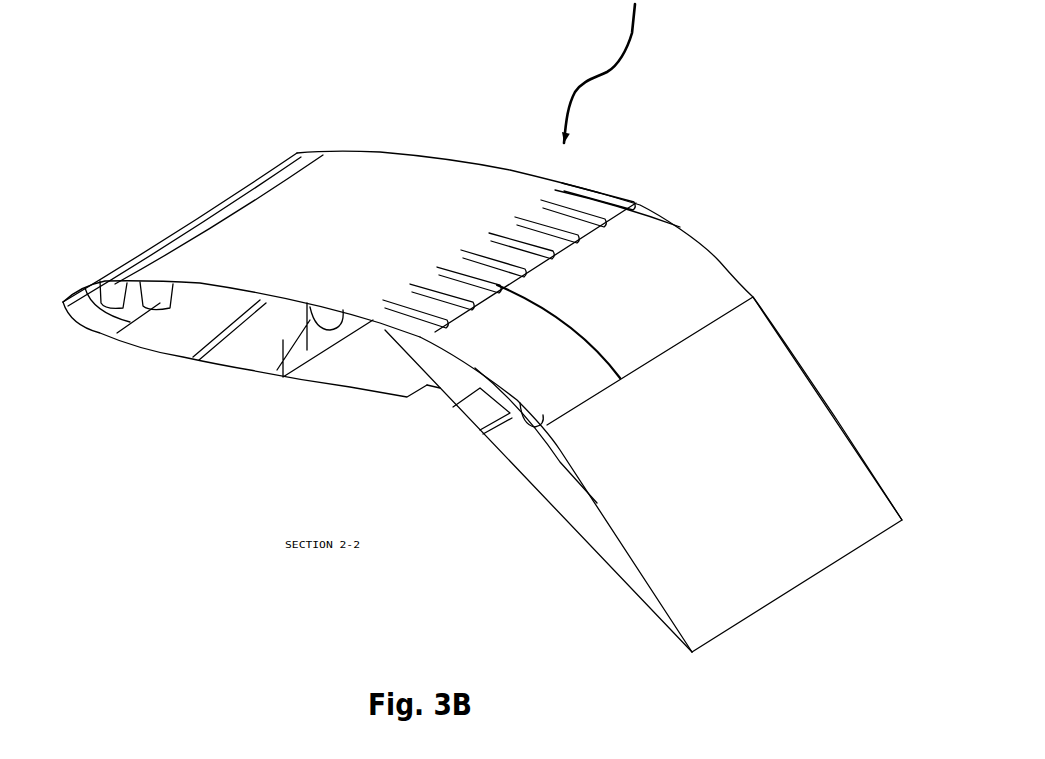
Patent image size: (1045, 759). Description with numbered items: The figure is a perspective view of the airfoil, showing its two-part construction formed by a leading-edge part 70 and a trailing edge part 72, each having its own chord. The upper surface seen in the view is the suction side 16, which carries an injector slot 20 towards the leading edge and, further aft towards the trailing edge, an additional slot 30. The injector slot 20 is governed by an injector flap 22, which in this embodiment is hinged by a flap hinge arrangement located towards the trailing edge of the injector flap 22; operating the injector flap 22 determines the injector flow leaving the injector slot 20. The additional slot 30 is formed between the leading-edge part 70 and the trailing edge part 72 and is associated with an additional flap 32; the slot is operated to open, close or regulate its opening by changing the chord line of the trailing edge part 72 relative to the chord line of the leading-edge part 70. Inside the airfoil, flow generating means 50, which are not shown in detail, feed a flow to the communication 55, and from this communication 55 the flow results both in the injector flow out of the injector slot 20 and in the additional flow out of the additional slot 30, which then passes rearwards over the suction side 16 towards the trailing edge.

The suction side 16 is at (400, 203).
The injector slot 20 is at (123, 258).
The injector flap 22 is at (297, 153).
The additional slot 30 is at (577, 270).
The additional flap 32 is at (642, 225).
The flow generating means 50 is at (112, 487).
The communication 55 is at (160, 330).
The airfoil leading-edge part 70 is at (223, 393).
The trailing edge part 72 is at (508, 522).